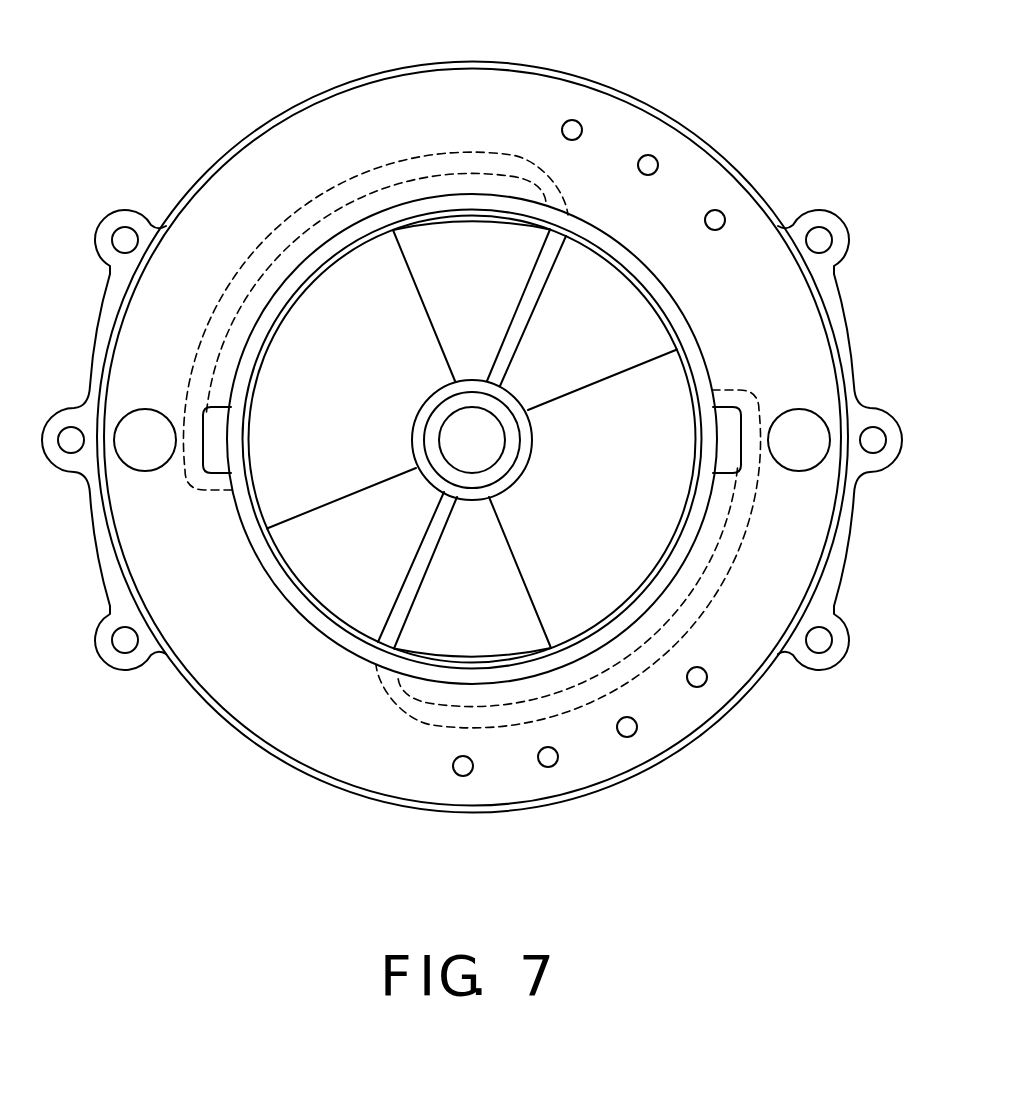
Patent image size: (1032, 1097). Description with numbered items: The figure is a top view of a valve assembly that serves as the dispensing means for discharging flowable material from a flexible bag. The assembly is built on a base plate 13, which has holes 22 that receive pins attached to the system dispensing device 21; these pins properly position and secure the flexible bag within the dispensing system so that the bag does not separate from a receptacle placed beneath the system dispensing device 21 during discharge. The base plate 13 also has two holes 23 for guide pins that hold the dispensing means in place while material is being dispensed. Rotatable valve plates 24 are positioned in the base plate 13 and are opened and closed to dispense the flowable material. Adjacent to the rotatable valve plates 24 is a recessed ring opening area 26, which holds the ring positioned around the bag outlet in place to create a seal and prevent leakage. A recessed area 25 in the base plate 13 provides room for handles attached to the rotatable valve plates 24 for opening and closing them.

The base plate 13 is at (451, 93).
The system dispensing device 21 is at (198, 697).
The holes 22 is at (572, 127).
The holes for guide pins 23 is at (140, 435).
The rotatable valve plates 24 is at (302, 485).
The recessed area 25 is at (310, 240).
The recessed ring opening area 26 is at (690, 352).